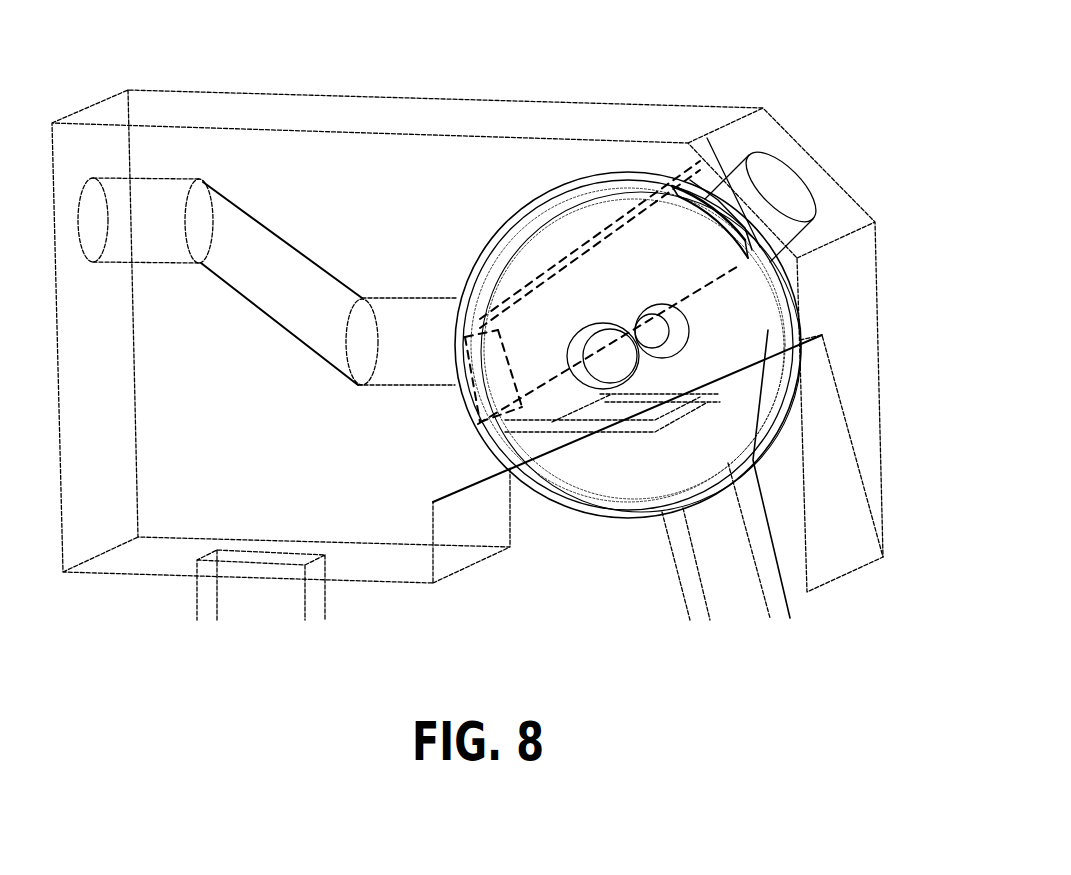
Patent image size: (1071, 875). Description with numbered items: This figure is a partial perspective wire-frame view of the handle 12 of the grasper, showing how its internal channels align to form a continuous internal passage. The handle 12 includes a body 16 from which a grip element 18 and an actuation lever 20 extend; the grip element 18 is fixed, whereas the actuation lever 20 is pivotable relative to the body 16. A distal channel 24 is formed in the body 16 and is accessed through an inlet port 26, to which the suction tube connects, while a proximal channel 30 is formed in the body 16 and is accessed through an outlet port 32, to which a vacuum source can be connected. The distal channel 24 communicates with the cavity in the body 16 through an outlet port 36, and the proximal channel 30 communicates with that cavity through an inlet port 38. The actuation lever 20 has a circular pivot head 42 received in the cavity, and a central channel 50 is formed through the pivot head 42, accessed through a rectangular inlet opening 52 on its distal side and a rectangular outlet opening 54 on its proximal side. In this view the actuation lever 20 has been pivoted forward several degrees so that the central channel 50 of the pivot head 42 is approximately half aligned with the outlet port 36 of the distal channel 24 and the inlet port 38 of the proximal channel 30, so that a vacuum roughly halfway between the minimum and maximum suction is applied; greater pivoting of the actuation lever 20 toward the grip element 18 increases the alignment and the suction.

The handle 12 is at (892, 78).
The body 16 is at (442, 107).
The grip element 18 is at (175, 607).
The actuation lever 20 is at (657, 565).
The distal channel 24 is at (298, 268).
The inlet port 26 is at (70, 242).
The proximal channel 30 is at (780, 220).
The outlet port 32 is at (785, 165).
The outlet port 36 is at (483, 312).
The inlet port 38 is at (735, 262).
The pivot head 42 is at (568, 488).
The central channel 50 is at (597, 257).
The inlet opening 52 is at (455, 409).
The outlet opening 54 is at (700, 182).